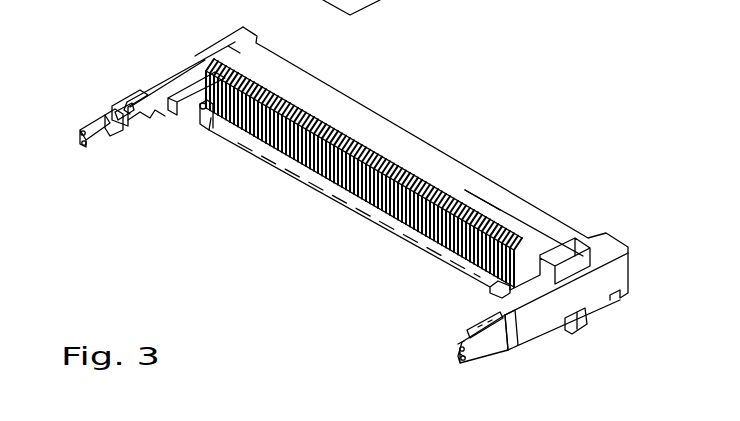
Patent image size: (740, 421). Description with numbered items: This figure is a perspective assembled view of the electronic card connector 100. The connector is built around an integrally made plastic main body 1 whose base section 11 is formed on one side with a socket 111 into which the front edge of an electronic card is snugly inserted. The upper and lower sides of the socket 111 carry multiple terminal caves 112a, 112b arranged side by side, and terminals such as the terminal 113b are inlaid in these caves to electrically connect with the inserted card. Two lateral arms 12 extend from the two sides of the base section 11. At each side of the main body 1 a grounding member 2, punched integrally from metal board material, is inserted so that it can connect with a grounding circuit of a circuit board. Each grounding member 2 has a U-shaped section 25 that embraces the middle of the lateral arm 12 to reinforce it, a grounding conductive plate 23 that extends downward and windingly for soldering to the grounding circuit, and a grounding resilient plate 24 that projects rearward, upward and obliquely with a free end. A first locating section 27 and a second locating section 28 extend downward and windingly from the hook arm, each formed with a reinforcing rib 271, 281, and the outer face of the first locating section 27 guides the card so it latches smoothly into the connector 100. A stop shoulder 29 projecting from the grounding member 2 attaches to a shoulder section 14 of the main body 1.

The electronic card connector 100 is at (398, 208).
The plastic main body 1 is at (398, 216).
The base section 11 is at (460, 167).
The lateral arm 12 is at (487, 345).
The shoulder section 14 is at (205, 115).
The socket 111 is at (313, 113).
The terminal cave 112a is at (480, 216).
The terminal cave 112b is at (367, 197).
The terminal 113b is at (217, 131).
The grounding member 2 is at (325, 214).
The grounding conductive plate 23 is at (582, 326).
The grounding resilient plate 24 is at (148, 120).
The U-shaped section 25 is at (137, 85).
The first locating section 27 is at (122, 137).
The reinforcing rib 271 is at (120, 107).
The second locating section 28 is at (242, 241).
The reinforcing rib 281 is at (93, 112).
The stop shoulder 29 is at (197, 110).